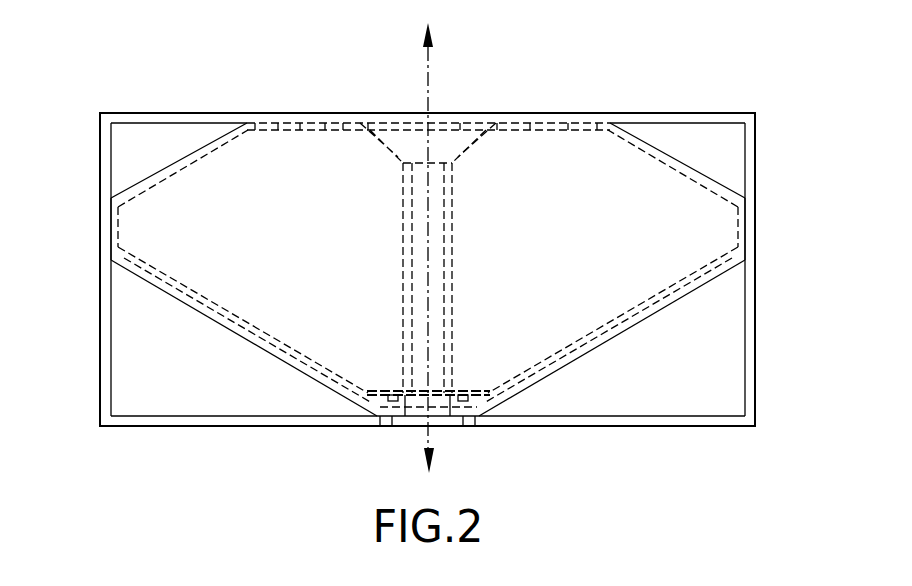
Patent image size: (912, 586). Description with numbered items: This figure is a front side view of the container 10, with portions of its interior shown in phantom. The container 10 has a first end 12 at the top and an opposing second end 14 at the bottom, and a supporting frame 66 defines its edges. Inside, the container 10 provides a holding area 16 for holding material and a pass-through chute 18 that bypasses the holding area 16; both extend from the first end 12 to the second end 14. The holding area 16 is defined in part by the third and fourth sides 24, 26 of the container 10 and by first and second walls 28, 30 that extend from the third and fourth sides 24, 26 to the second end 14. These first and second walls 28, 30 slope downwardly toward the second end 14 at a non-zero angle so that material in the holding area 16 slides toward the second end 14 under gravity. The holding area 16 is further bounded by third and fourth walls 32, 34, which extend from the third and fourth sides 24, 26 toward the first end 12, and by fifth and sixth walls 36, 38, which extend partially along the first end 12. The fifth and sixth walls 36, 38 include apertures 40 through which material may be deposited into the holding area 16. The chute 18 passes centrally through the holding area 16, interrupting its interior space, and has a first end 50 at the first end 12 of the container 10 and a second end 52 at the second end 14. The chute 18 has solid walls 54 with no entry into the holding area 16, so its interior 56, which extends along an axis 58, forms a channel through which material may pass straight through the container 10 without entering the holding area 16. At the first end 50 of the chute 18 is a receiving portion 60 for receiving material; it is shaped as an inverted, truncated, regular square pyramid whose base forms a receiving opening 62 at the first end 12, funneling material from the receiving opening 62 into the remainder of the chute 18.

The container 10 is at (124, 82).
The first end 12 is at (688, 112).
The second end 14 is at (695, 427).
The holding area 16 is at (268, 177).
The pass-through chute 18 is at (367, 125).
The third side 24 is at (111, 233).
The fourth side 26 is at (745, 232).
The first wall 28 is at (213, 322).
The second wall 30 is at (613, 338).
The third wall 32 is at (192, 152).
The fourth wall 34 is at (700, 175).
The fifth wall 36 is at (345, 125).
The sixth wall 38 is at (535, 128).
The apertures 40 is at (300, 123).
The first end of the chute 50 is at (420, 125).
The second end of the chute 52 is at (432, 430).
The solid walls 54 is at (452, 285).
The interior of the chute 56 is at (437, 248).
The axis 58 is at (430, 207).
The receiving portion 60 is at (462, 125).
The receiving opening 62 is at (500, 125).
The supporting frame 66 is at (100, 365).